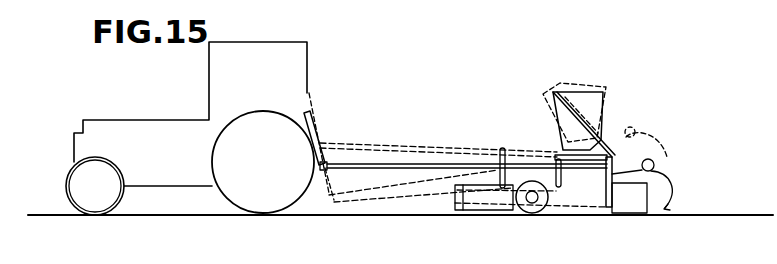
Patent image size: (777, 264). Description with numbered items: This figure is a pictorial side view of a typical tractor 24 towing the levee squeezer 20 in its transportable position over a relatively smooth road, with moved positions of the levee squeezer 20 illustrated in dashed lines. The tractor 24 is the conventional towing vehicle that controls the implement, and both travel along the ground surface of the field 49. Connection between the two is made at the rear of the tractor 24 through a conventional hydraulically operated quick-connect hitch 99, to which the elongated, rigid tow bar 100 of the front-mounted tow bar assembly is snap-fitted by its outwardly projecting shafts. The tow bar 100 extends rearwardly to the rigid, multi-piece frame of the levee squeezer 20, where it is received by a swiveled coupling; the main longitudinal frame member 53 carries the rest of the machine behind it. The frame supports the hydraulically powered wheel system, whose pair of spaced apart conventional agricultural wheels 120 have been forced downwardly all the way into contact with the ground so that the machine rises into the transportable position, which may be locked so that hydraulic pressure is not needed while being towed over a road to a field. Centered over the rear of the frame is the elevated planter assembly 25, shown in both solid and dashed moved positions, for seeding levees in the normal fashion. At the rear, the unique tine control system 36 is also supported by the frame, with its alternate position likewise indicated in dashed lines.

The tractor 24 is at (162, 108).
The field 49 is at (193, 204).
The quick-connect hitch 99 is at (321, 142).
The tow bar 100 is at (338, 163).
The frame beam 53 is at (422, 165).
The levee squeezer 20 is at (478, 138).
The planter assembly 25 is at (617, 93).
The tine control system 36 is at (673, 143).
The agricultural wheels 120 is at (533, 208).